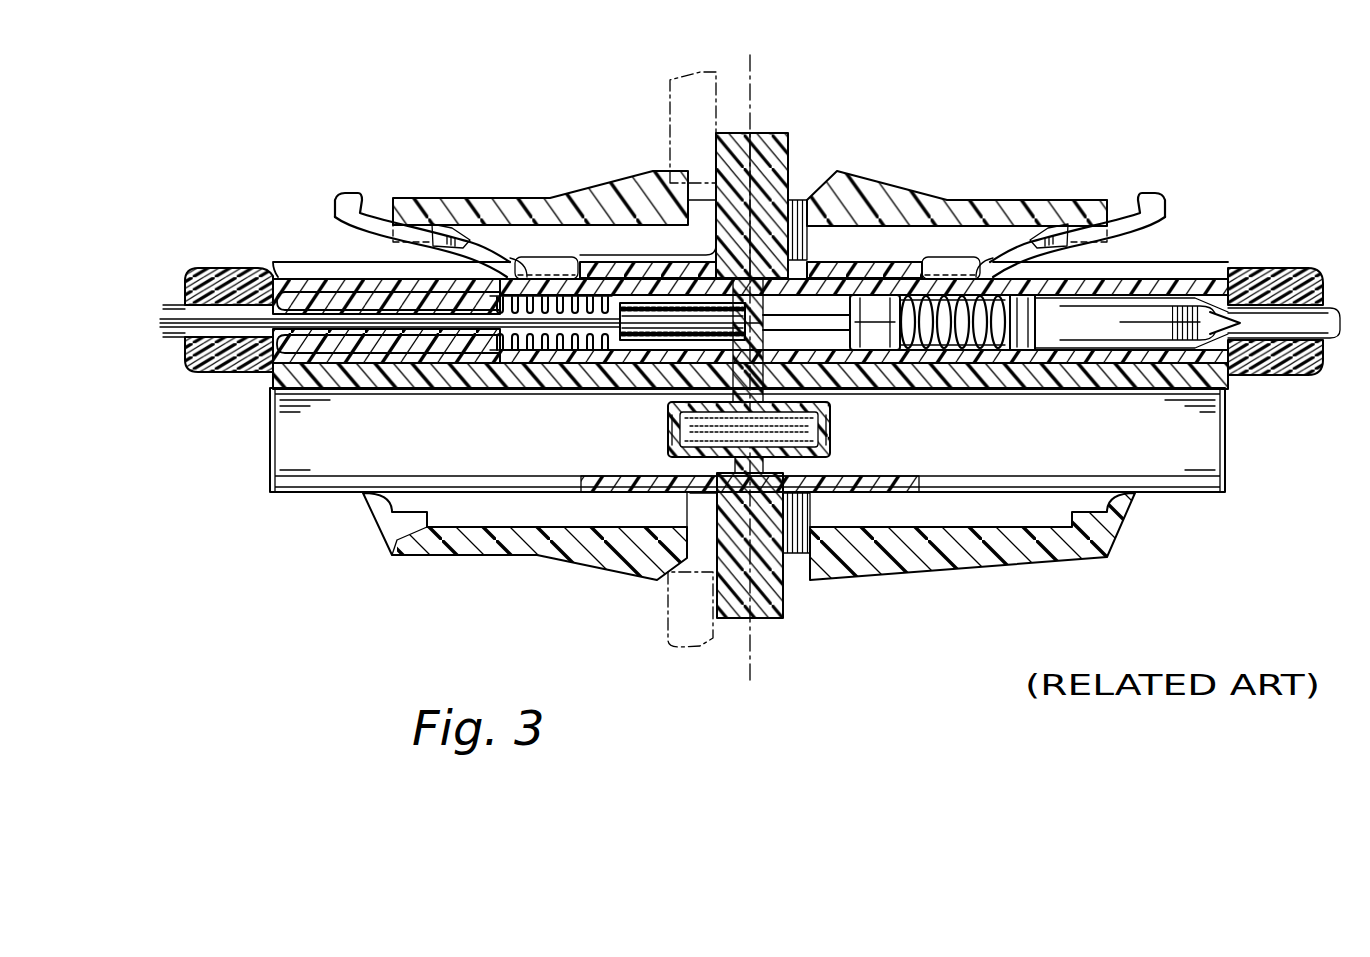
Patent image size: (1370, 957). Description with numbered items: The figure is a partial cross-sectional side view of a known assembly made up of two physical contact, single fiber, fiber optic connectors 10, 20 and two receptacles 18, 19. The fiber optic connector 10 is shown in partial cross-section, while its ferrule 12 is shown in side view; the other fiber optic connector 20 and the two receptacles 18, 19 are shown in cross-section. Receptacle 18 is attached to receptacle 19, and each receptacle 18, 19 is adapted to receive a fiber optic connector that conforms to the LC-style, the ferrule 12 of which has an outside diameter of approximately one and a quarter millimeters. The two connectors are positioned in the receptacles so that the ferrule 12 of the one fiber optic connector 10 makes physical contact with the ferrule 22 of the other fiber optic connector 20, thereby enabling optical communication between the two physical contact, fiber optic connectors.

The fiber optic connector 10 is at (1263, 268).
The ferrule 12 is at (800, 322).
The receptacle 18 is at (789, 148).
The receptacle 19 is at (745, 300).
The fiber optic connector 20 is at (213, 266).
The ferrule 22 is at (683, 307).